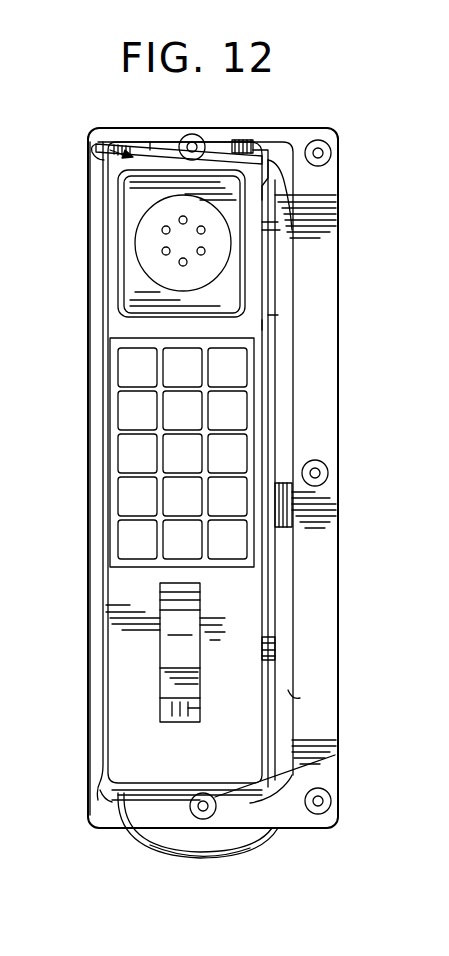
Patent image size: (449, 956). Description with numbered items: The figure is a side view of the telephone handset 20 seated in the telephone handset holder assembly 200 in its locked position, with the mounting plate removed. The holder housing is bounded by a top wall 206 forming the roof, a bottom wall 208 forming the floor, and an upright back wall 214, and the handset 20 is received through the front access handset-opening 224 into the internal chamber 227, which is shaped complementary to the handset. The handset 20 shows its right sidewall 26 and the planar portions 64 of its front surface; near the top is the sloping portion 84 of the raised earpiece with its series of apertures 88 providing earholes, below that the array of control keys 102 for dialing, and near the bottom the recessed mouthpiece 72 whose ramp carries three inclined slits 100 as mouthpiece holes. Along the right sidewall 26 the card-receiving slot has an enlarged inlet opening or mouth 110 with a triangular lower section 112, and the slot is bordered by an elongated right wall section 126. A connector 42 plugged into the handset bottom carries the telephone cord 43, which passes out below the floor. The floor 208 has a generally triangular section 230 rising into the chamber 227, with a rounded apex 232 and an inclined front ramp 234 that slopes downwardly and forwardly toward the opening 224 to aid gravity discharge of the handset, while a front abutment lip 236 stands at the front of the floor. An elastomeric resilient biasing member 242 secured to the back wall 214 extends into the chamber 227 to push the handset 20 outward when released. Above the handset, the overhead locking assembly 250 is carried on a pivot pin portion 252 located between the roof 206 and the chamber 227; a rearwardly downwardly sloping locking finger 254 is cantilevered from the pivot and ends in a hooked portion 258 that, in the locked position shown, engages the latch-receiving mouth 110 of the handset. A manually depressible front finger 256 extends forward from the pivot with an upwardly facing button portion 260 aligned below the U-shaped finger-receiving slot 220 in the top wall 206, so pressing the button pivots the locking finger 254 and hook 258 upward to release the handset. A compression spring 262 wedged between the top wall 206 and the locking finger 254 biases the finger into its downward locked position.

The telephone handset 20 is at (100, 565).
The right sidewall 26 is at (278, 586).
The connector 42 is at (118, 815).
The telephone cord 43 is at (204, 858).
The planar portions of front surface 64 is at (268, 648).
The mouthpiece 72 is at (160, 677).
The sloping portion of earpiece 84 is at (135, 272).
The apertures 88 is at (183, 266).
The inclined slits 100 is at (200, 712).
The control keys 102 is at (130, 403).
The card-receiving inlet opening 110 is at (262, 222).
The triangular lower section 112 is at (262, 230).
The elongated right wall section 126 is at (268, 300).
The telephone handset holder assembly 200 is at (345, 126).
The top wall 206 is at (310, 130).
The bottom wall 208 is at (283, 829).
The back wall 214 is at (338, 364).
The finger-receiving slot 220 is at (152, 130).
The front access handset-opening 224 is at (92, 736).
The internal chamber 227 is at (292, 682).
The triangular section 230 is at (330, 758).
The rounded apex 232 is at (198, 792).
The inclined front ramp 234 is at (152, 800).
The front abutment lip 236 is at (95, 775).
The elastomeric resilient biasing member 242 is at (290, 528).
The overhead locking assembly 250 is at (122, 154).
The pivot pin portion 252 is at (196, 142).
The locking finger 254 is at (262, 152).
The front finger 256 is at (145, 140).
The hooked portion 258 is at (288, 196).
The finger-engaging button portion 260 is at (96, 148).
The compression spring 262 is at (245, 138).